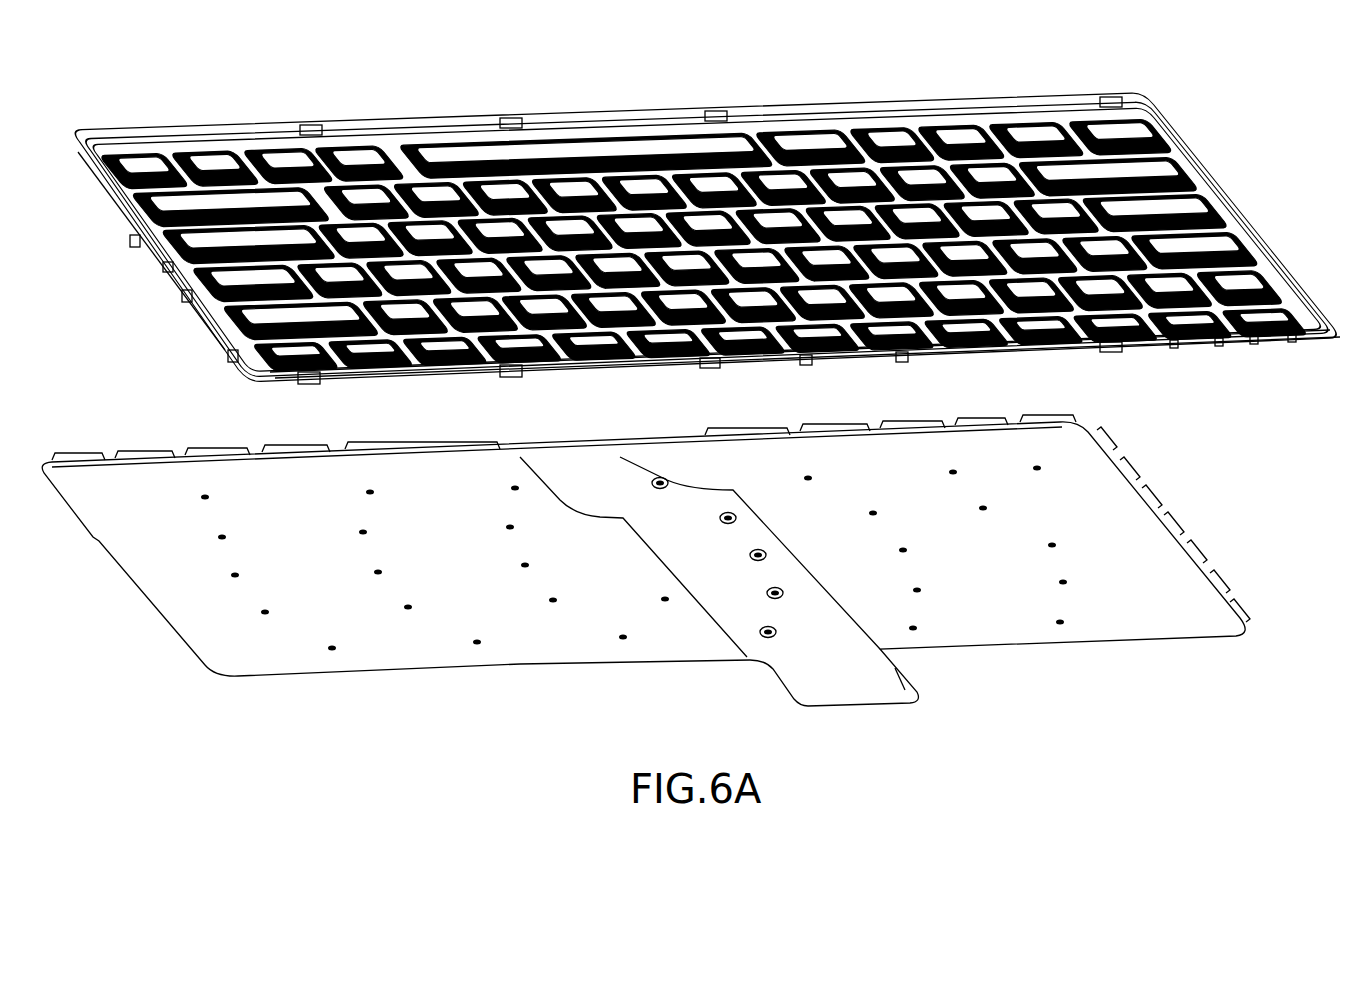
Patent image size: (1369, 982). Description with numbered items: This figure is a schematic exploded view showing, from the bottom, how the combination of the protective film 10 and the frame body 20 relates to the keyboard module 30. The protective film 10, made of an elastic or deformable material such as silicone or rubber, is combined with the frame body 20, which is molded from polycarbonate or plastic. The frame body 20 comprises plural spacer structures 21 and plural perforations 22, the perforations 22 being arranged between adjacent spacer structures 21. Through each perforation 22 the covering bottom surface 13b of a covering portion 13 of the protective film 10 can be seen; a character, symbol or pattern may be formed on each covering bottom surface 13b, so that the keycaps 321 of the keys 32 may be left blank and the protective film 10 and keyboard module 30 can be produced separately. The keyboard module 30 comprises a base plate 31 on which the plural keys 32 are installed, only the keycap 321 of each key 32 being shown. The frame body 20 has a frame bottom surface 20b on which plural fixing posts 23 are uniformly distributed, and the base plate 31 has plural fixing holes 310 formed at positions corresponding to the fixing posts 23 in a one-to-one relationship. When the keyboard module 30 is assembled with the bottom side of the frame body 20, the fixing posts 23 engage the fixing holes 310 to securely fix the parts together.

The protective film 10 is at (696, 239).
The covering portion 13 is at (709, 244).
The covering bottom surface 13b is at (906, 140).
The frame body 20 is at (697, 239).
The frame bottom surface 20b is at (973, 342).
The spacer structure 21 is at (190, 172).
The perforation 22 is at (293, 162).
The fixing post 23 is at (568, 350).
The keyboard module 30 is at (666, 549).
The base plate 31 is at (677, 641).
The key 32 is at (651, 505).
The keycap 321 is at (757, 430).
The fixing hole 310 is at (475, 644).